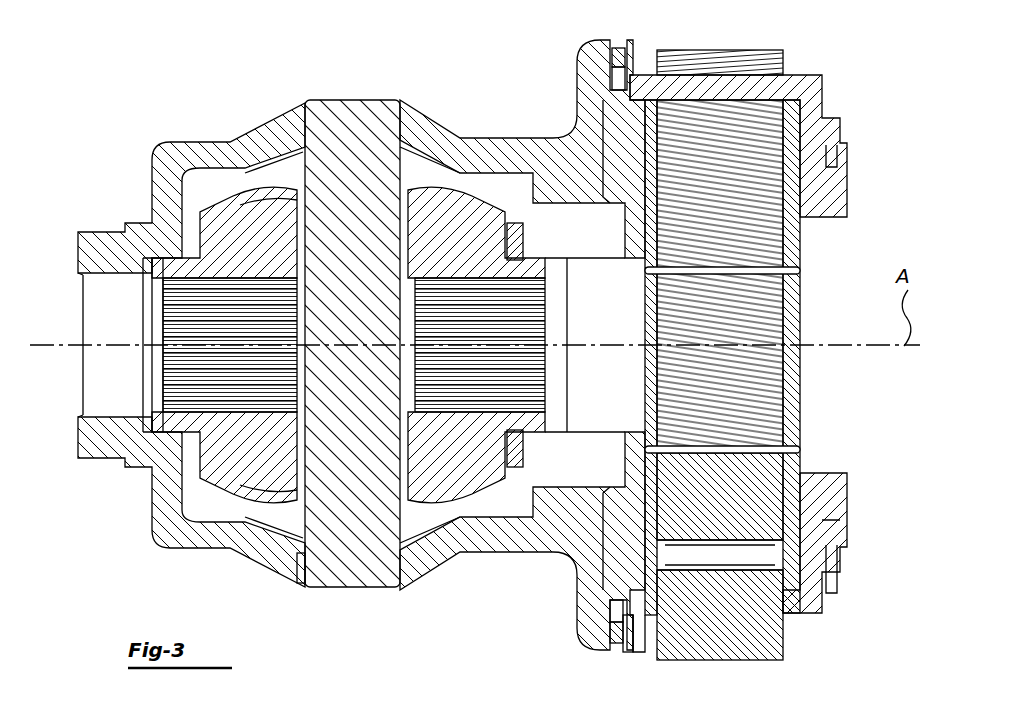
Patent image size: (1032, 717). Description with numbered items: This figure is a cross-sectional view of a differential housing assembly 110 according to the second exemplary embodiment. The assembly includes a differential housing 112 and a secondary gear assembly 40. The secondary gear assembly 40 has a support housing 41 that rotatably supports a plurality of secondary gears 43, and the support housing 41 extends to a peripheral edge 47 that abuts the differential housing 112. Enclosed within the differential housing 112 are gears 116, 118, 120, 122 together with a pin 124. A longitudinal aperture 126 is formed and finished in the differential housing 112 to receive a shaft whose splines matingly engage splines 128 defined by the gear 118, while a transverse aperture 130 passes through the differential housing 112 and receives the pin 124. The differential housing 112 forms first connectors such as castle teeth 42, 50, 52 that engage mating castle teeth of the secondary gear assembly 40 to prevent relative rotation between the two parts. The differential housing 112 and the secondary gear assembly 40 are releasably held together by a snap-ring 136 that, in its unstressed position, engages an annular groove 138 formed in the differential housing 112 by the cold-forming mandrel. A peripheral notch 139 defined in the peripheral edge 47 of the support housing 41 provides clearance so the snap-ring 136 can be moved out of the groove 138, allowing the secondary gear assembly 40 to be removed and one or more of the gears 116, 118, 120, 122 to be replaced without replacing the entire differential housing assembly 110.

The differential housing assembly 110 is at (129, 118).
The differential housing 112 is at (172, 527).
The gear 116 is at (507, 227).
The gear 118 is at (222, 230).
The gear 120 is at (425, 173).
The gear 122 is at (428, 505).
The pin 124 is at (340, 117).
The longitudinal aperture 126 is at (105, 400).
The splines 128 is at (175, 315).
The transverse aperture 130 is at (290, 580).
The snap-ring 136 is at (598, 652).
The annular groove 138 is at (617, 47).
The peripheral notch 139 is at (612, 88).
The secondary gear assembly 40 is at (870, 110).
The support housing 41 is at (824, 68).
The castle tooth 42 is at (345, 712).
The secondary gears 43 is at (767, 203).
The peripheral edge 47 is at (633, 647).
The castle tooth 50 is at (614, 655).
The castle tooth 52 is at (635, 45).